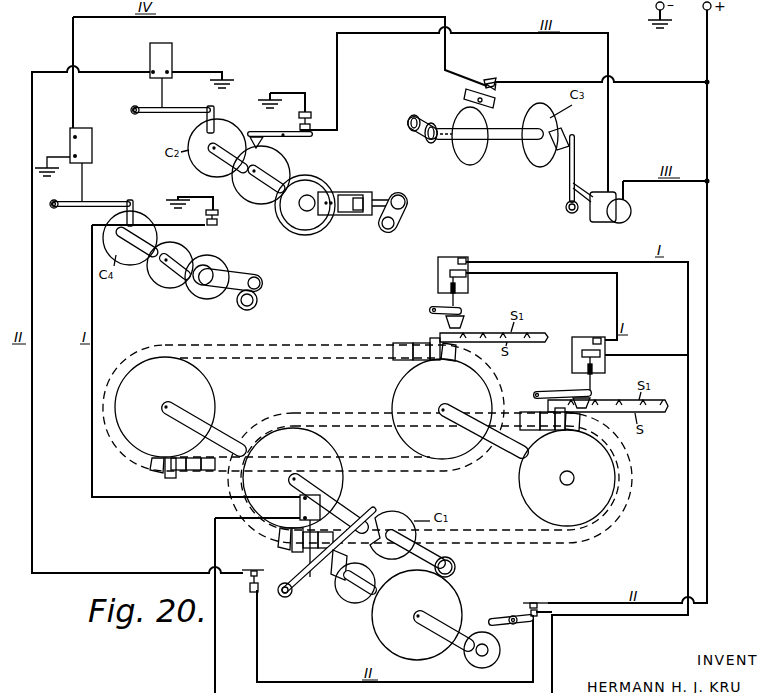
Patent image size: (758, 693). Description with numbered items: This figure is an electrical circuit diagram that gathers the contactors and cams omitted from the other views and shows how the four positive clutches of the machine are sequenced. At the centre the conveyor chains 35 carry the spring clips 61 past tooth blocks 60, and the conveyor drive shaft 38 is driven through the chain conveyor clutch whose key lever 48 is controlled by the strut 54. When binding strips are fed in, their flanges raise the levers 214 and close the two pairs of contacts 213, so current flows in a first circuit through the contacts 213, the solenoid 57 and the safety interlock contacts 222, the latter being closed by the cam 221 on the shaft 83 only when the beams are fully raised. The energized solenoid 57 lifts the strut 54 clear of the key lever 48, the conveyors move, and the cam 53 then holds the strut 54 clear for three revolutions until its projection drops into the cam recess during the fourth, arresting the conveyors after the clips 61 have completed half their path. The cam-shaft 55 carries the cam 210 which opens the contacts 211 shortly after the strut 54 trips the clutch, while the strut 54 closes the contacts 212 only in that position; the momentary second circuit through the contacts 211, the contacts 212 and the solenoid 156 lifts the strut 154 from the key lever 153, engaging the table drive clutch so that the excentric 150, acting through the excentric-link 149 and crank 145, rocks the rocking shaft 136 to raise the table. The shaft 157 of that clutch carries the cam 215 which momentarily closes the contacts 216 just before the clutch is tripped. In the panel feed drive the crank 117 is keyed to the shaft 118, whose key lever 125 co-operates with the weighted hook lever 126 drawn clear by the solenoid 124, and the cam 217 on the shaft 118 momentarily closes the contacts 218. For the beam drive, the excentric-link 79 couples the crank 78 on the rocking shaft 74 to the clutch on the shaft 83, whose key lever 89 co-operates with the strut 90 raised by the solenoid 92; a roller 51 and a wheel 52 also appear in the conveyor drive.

The conveyor chains 35 is at (326, 412).
The conveyor drive shaft 38 is at (221, 432).
The key lever 48 is at (382, 514).
The roller 51 is at (455, 560).
The wheel 52 is at (455, 600).
The cam 53 is at (347, 596).
The strut 54 is at (328, 567).
The cam-shaft 55 is at (436, 626).
The solenoid 57 is at (323, 503).
The tooth block 60 is at (503, 388).
The spring clips 61 is at (560, 428).
The rocking shaft 74 is at (241, 306).
The crank 78 is at (260, 285).
The excentric-link 79 is at (240, 271).
The shaft 83 is at (177, 268).
The radial key lever 89 is at (133, 203).
The strut 90 is at (97, 202).
The solenoid 92 is at (93, 148).
The crank 117 is at (426, 123).
The shaft 118 is at (510, 141).
The solenoid 124 is at (618, 222).
The radial key lever 125 is at (556, 152).
The hook lever 126 is at (578, 172).
The rocking shaft 136 is at (389, 232).
The crank 145 is at (378, 213).
The excentric-link 149 is at (318, 183).
The excentric 150 is at (296, 218).
The radial key lever 153 is at (214, 110).
The strut 154 is at (205, 106).
The solenoid 156 is at (173, 58).
The shaft 157 is at (276, 180).
The cam 210 is at (505, 651).
The contacts 211 is at (548, 606).
The contacts 212 is at (249, 591).
The contacts 213 is at (592, 346).
The levers 214 is at (558, 392).
The cam 215 is at (256, 196).
The contacts 216 is at (308, 118).
The cam 217 is at (468, 163).
The contacts 218 is at (488, 85).
The cam 221 is at (157, 273).
The contacts 222 is at (219, 224).